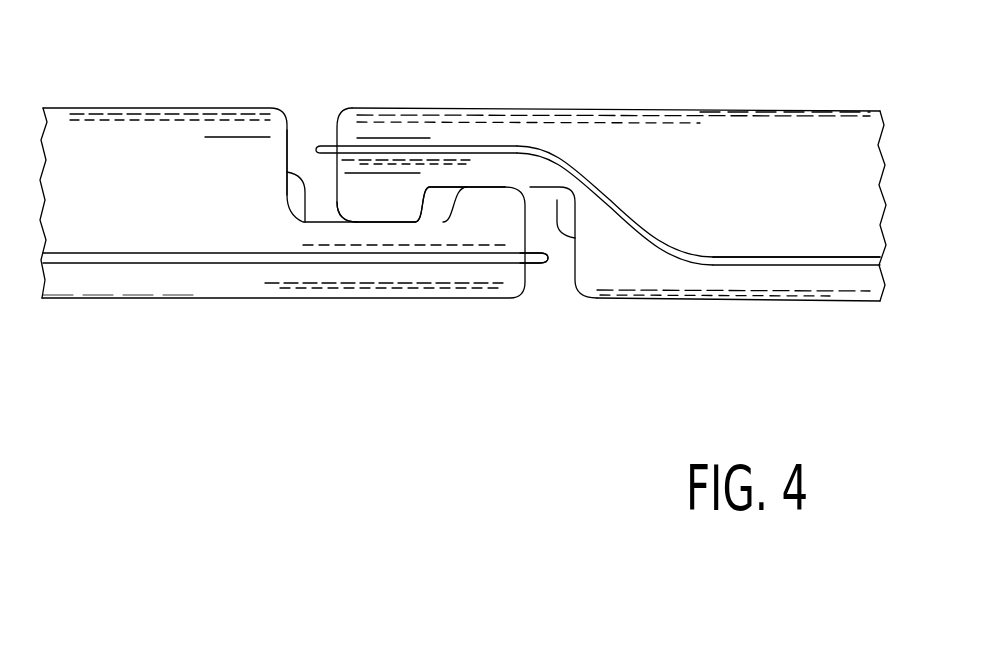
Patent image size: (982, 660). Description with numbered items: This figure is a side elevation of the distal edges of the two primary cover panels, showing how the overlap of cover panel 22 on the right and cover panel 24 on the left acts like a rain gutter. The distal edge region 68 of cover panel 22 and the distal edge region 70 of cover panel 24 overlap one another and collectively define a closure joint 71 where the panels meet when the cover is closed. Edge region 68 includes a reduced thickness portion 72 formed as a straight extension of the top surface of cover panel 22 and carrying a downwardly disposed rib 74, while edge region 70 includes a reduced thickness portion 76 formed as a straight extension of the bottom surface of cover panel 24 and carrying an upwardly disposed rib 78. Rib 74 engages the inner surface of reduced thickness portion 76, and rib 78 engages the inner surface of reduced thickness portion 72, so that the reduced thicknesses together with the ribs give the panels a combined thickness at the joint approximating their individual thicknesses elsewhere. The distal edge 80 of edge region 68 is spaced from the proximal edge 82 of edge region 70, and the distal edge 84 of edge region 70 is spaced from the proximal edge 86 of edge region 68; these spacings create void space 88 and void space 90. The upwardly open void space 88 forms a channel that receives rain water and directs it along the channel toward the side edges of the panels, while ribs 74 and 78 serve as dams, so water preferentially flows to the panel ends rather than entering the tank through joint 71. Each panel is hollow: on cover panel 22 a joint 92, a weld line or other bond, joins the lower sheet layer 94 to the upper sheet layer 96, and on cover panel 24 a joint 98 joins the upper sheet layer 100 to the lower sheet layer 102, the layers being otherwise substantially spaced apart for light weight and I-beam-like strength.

The cover panel 22 is at (728, 197).
The cover panel 24 is at (143, 204).
The distal edge region 68 is at (413, 127).
The distal edge region 70 is at (410, 277).
The closure joint 71 is at (383, 222).
The reduced thickness portion 72 is at (463, 110).
The downwardly disposed rib 74 is at (367, 207).
The reduced thickness portion 76 is at (315, 298).
The upwardly disposed rib 78 is at (487, 200).
The distal edge 80 is at (312, 145).
The proximal edge 82 is at (303, 222).
The distal edge 84 is at (551, 265).
The proximal edge 86 is at (558, 188).
The void space 88 is at (297, 138).
The void space 90 is at (563, 266).
The joint 92 is at (768, 268).
The lower sheet layer 94 is at (658, 273).
The upper sheet layer 96 is at (675, 142).
The joint 98 is at (202, 263).
The upper sheet layer 100 is at (115, 130).
The lower sheet layer 102 is at (128, 283).